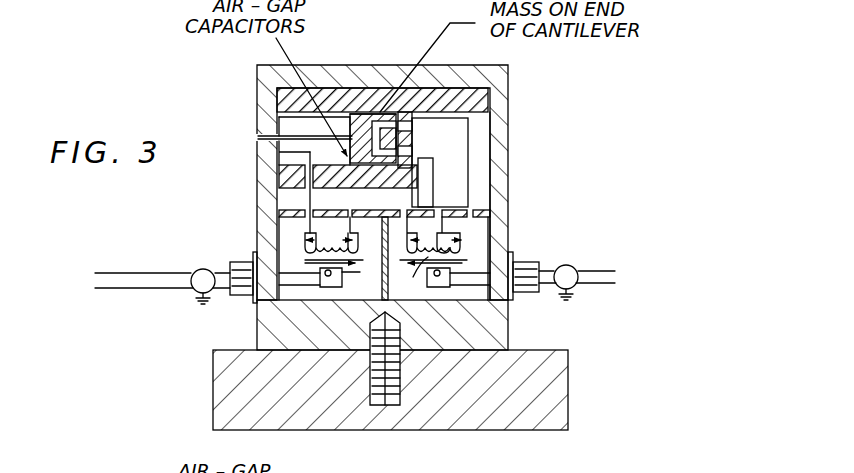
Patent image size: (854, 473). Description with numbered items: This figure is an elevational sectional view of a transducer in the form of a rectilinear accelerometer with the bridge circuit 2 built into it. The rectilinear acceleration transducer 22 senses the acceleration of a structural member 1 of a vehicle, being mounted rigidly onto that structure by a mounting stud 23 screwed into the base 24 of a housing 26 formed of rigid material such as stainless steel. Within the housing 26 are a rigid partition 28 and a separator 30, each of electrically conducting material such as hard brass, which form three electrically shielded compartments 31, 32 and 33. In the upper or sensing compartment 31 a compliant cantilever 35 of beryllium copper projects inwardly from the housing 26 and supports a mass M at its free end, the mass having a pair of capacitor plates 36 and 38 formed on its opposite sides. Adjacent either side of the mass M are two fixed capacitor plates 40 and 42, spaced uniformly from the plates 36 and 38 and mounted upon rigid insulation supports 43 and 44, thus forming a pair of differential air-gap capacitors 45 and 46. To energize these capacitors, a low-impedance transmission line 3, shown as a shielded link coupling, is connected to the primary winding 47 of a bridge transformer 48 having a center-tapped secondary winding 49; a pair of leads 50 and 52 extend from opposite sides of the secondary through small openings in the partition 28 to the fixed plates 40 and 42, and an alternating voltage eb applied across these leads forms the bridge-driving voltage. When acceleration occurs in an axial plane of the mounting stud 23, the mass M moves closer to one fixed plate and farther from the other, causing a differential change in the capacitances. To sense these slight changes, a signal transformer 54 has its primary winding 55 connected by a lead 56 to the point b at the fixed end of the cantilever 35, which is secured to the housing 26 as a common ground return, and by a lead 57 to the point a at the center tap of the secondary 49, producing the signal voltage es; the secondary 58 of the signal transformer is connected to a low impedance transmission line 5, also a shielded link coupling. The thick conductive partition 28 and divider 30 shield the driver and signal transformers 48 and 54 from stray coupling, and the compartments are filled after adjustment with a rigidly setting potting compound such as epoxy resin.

The structural member 1 is at (543, 350).
The bridge circuit 2 is at (290, 122).
The low-impedance transmission line 3 is at (571, 266).
The low impedance transmission line 5 is at (200, 268).
The rectilinear acceleration transducer 22 is at (443, 62).
The mounting stud 23 is at (380, 388).
The base 24 is at (500, 322).
The housing 26 is at (505, 158).
The partition 28 is at (446, 211).
The separator 30 is at (390, 298).
The sensing compartment 31 is at (483, 140).
The compartment 32 is at (280, 232).
The compartment 33 is at (491, 240).
The compliant cantilever 35 is at (349, 117).
The capacitor plate 36 is at (412, 126).
The capacitor plate 38 is at (412, 150).
The capacitor plate 40 is at (373, 119).
The capacitor plate 42 is at (350, 190).
The insulation support 43 is at (505, 113).
The insulation support 44 is at (418, 181).
The air-gap capacitor 45 is at (362, 117).
The air-gap capacitor 46 is at (347, 160).
The primary winding 47 is at (458, 285).
The bridge transformer 48 is at (458, 259).
The center-tapped secondary winding 49 is at (412, 274).
The lead 50 is at (404, 236).
The lead 52 is at (492, 214).
The signal transformer 54 is at (352, 268).
The primary winding 55 is at (341, 252).
The lead 56 is at (307, 232).
The lead 57 is at (363, 235).
The secondary 58 is at (310, 285).
The point a is at (448, 235).
The point b is at (305, 129).
The mass M is at (373, 138).
The signal voltage es is at (329, 242).
The bridge-driving voltage eb is at (436, 242).